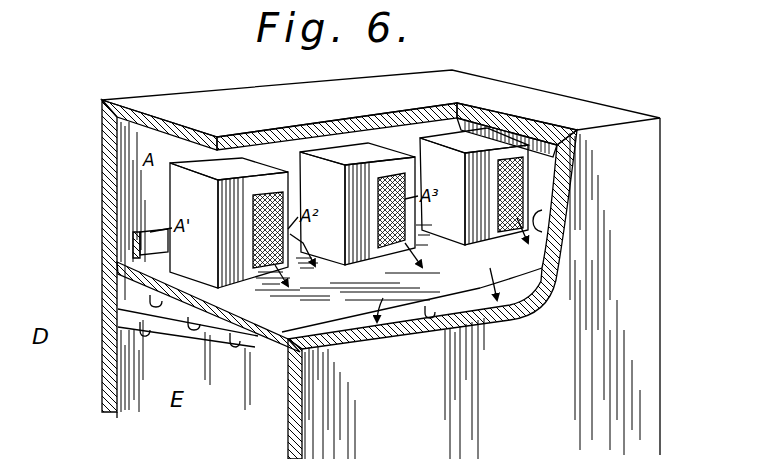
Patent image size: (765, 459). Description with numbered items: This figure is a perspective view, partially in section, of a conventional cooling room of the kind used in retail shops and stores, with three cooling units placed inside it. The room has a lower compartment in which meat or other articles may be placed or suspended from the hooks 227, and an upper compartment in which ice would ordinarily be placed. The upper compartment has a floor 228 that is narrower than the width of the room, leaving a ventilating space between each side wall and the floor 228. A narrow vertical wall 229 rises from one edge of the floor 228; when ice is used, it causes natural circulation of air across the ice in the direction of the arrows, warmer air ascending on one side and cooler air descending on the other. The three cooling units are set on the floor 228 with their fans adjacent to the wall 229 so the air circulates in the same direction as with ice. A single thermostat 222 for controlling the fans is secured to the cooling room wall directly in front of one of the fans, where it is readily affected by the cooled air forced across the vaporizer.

The thermostat 222 is at (548, 223).
The hooks 227 is at (195, 319).
The floor 228 is at (296, 326).
The narrow vertical wall 229 is at (148, 243).